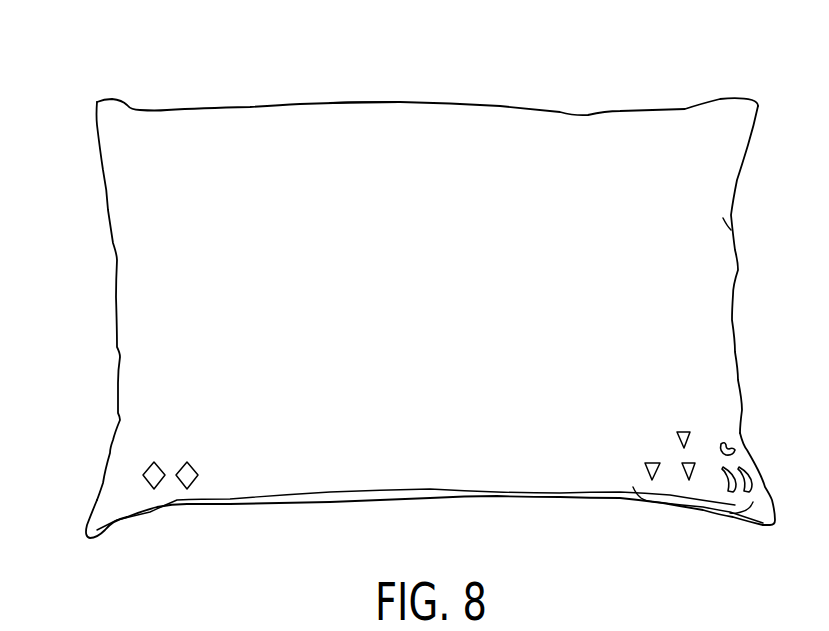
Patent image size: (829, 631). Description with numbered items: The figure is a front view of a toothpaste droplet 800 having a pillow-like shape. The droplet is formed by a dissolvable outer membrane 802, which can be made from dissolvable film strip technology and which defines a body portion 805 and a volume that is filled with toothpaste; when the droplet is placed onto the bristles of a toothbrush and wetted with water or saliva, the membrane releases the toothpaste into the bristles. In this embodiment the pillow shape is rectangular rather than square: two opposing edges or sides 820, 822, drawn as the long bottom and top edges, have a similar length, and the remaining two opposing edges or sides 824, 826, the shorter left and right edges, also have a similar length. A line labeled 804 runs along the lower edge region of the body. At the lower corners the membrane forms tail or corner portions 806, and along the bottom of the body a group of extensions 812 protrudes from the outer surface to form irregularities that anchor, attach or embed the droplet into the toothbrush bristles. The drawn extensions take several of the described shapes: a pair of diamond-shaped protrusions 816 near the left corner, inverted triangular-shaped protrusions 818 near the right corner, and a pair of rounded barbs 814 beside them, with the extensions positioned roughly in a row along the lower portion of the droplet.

The toothpaste droplet 800 is at (690, 81).
The outer membrane 802 is at (705, 268).
The bottom edge seam 804 is at (495, 478).
The top panel 805 is at (372, 125).
The corner 806 is at (107, 495).
The flap region with triangular vents 812 is at (679, 508).
The curved slot vents 814 is at (753, 483).
The diamond shaped vents 816 is at (155, 489).
The crescent shaped vent 818 is at (734, 445).
The edge or side 820 is at (297, 507).
The edge or side 822 is at (283, 103).
The edge or side 824 is at (115, 290).
The edge or side 826 is at (735, 335).